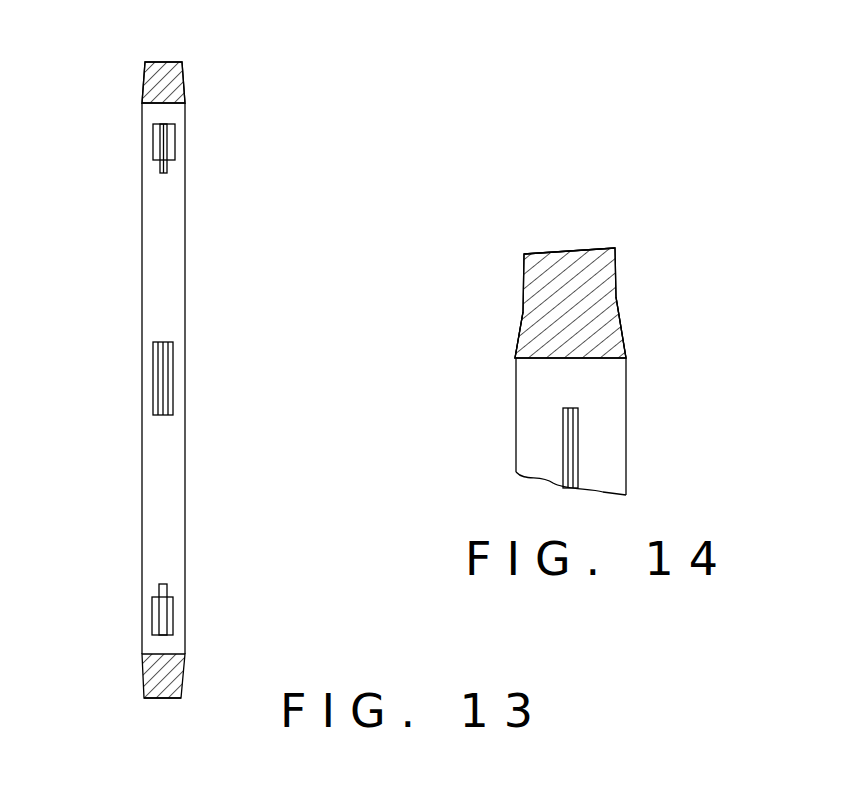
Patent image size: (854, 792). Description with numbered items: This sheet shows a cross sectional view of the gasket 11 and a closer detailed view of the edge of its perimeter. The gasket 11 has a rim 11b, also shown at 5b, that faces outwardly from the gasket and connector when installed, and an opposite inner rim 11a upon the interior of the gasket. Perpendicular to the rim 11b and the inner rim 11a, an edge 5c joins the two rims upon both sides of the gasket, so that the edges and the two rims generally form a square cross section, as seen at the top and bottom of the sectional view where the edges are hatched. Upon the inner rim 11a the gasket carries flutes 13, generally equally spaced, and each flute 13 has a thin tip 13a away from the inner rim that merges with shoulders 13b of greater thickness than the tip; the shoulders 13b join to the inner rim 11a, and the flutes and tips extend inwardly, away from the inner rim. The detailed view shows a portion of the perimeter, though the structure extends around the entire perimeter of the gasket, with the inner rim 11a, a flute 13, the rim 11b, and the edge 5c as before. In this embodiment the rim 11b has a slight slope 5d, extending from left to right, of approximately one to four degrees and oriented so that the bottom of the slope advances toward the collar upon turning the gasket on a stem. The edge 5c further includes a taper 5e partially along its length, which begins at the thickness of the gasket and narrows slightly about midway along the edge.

In FIG. 13, the gasket 11 is at (177, 45).
In FIG. 13, the inner rim 11a is at (165, 219).
In FIG. 14, the inner rim 11a is at (547, 417).
In FIG. 13, the rim 11b is at (156, 62).
In FIG. 14, the rim 11b is at (540, 252).
In FIG. 13, the rim 5b is at (158, 698).
In FIG. 13, the edge 5c is at (183, 82).
In FIG. 14, the edge 5c is at (517, 295).
In FIG. 14, the slope 5d is at (583, 250).
In FIG. 14, the taper 5e is at (520, 337).
In FIG. 13, the flute 13 is at (168, 373).
In FIG. 14, the flute 13 is at (579, 457).
In FIG. 13, the tip 13a is at (162, 170).
In FIG. 13, the shoulders 13b is at (175, 142).